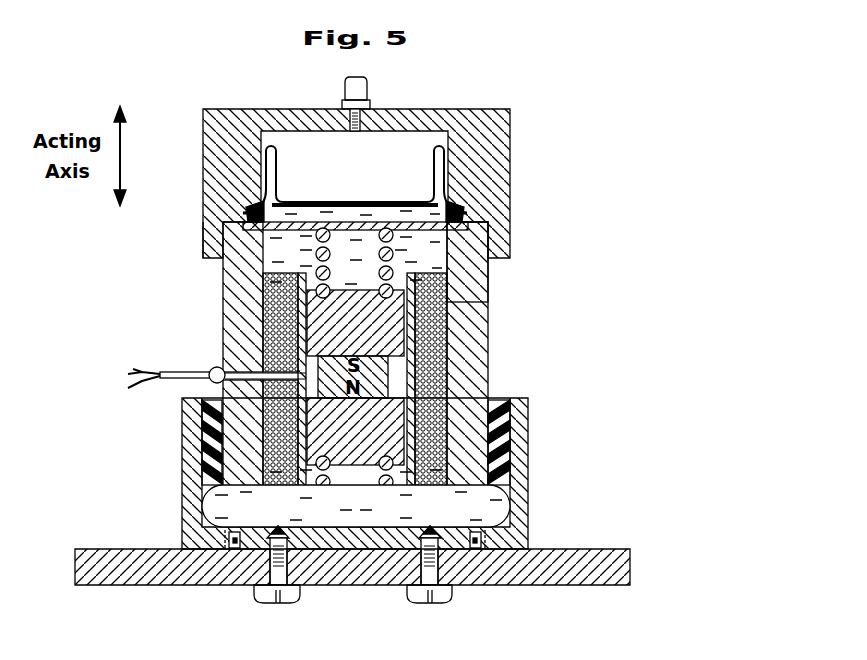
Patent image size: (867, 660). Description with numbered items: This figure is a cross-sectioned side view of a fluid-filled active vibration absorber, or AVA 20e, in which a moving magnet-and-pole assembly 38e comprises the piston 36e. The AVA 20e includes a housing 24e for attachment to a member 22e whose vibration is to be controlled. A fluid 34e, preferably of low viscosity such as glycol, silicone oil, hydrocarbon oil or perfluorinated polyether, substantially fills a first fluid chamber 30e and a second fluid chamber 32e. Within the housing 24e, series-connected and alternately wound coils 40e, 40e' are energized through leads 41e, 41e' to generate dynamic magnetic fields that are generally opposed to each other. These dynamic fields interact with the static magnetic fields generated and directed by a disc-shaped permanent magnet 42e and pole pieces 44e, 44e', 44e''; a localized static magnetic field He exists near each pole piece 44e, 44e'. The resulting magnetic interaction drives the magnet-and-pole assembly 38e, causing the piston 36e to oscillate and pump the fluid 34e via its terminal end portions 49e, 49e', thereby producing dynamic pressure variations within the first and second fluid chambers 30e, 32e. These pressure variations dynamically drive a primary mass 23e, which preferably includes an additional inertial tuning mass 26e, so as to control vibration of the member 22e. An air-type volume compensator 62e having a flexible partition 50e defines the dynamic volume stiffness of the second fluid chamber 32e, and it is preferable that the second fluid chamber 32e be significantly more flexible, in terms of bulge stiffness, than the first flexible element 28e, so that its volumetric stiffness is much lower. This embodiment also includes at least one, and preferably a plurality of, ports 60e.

The fluid-filled AVA 20e is at (508, 352).
The member 22e is at (523, 587).
The primary mass 23e is at (190, 227).
The housing 24e is at (532, 516).
The inertial tuning mass 26e is at (510, 199).
The first flexible element 28e is at (200, 453).
The first fluid chamber 30e is at (475, 518).
The second fluid chamber 32e is at (238, 201).
The fluid 34e is at (205, 506).
The piston 36e is at (418, 338).
The magnet-and-pole assembly 38e is at (411, 380).
The coil 40e is at (204, 354).
The coil 40e' is at (533, 354).
The lead 41e is at (191, 389).
The lead 41e' is at (116, 362).
The disc shaped permanent magnet 42e is at (460, 370).
The pole piece 44e is at (355, 431).
The pole piece 44e' is at (355, 323).
The pole piece 44e'' is at (550, 262).
The terminal end portion 49e is at (283, 495).
The terminal end portion 49e' is at (356, 222).
The flexible partition 50e is at (450, 178).
The port 60e is at (487, 273).
The air-type volume compensator 62e is at (254, 163).
The localized static magnetic field He is at (223, 313).